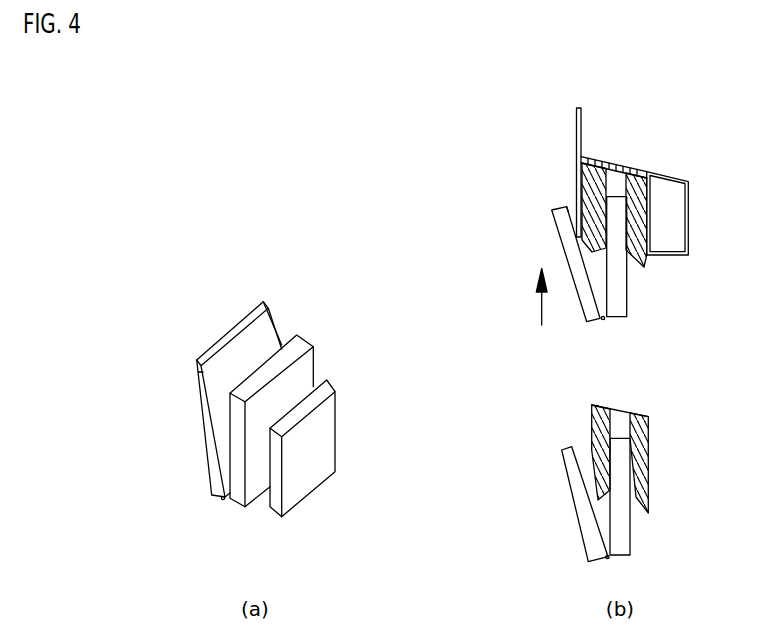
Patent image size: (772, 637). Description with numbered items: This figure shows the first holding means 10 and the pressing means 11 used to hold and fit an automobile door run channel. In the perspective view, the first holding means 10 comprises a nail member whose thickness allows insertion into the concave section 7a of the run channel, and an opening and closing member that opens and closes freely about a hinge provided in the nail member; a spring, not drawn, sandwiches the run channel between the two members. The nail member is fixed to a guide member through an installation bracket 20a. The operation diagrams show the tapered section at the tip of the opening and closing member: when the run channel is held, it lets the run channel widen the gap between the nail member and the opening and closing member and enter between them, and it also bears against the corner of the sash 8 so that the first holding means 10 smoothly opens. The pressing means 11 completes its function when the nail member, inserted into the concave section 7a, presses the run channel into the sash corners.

The concave section 7a is at (620, 416).
The automobile door sash 8 is at (576, 173).
The first holding means 10 is at (292, 288).
The pressing means 11 is at (342, 300).
The installation bracket 20a is at (333, 450).